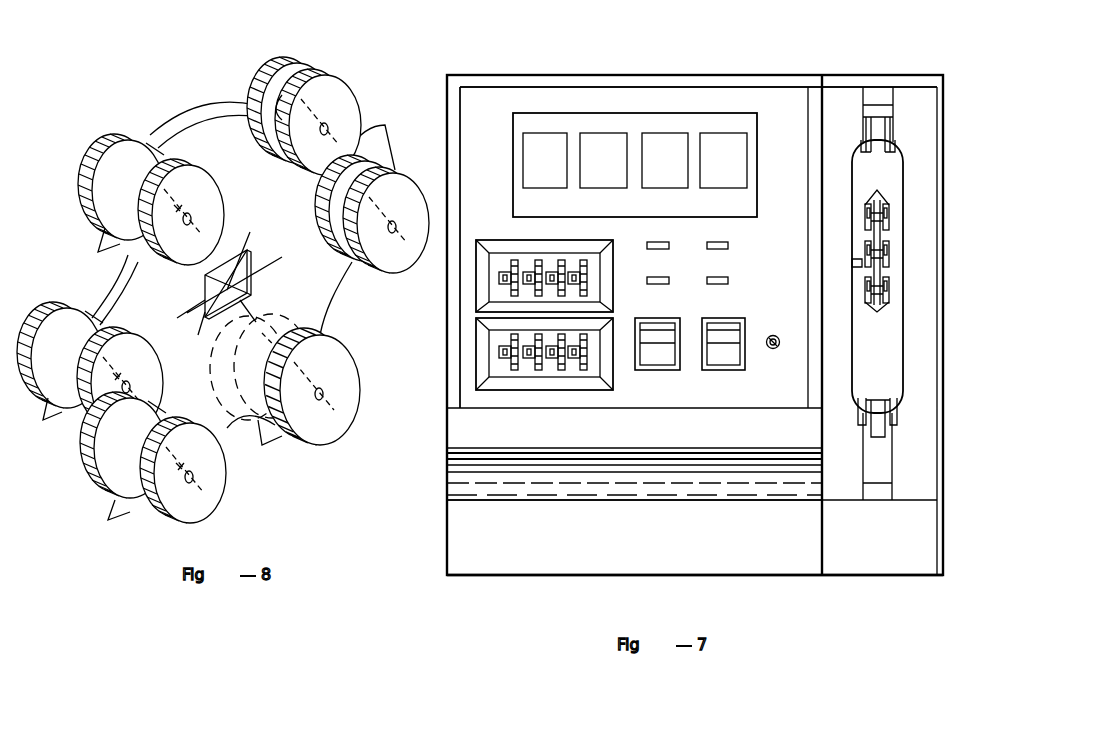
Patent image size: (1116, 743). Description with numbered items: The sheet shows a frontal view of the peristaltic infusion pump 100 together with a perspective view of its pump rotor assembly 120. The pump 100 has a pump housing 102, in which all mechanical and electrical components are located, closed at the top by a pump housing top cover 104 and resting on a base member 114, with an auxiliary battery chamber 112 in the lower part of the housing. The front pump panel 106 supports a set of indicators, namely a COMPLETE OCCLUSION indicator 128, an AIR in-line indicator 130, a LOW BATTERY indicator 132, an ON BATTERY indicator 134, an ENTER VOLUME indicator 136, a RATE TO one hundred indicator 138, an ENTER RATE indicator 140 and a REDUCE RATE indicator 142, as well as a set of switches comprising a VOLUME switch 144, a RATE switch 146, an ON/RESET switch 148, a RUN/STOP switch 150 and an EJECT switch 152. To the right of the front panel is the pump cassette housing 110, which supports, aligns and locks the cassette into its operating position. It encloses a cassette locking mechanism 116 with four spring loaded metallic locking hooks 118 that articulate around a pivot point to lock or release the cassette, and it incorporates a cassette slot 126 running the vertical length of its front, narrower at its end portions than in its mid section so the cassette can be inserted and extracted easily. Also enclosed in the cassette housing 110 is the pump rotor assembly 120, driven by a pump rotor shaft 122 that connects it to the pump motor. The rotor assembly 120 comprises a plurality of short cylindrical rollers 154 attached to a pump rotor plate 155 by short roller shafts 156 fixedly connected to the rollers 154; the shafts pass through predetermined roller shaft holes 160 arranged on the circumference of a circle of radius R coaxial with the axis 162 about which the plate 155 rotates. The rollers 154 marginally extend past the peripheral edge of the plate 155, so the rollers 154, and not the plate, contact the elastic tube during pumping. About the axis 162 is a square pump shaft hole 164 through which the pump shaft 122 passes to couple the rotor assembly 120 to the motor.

In FIG. 7, the peristaltic infusion pump 100 is at (716, 73).
In FIG. 7, the pump housing 102 is at (467, 429).
In FIG. 7, the pump housing top cover 104 is at (662, 78).
In FIG. 7, the front pump panel 106 is at (483, 100).
In FIG. 7, the pump cassette housing 110 is at (928, 480).
In FIG. 7, the auxiliary battery chamber 112 is at (467, 548).
In FIG. 7, the base member 114 is at (577, 578).
In FIG. 7, the cassette locking mechanism 116 is at (880, 100).
In FIG. 7, the locking hooks 118 is at (884, 143).
In FIG. 8, the pump rotor assembly 120 is at (223, 293).
In FIG. 7, the pump rotor shaft 122 is at (852, 263).
In FIG. 7, the cassette slot 126 is at (891, 360).
In FIG. 7, the COMPLETE OCCLUSION indicator 128 is at (560, 172).
In FIG. 7, the AIR in-line indicator 130 is at (618, 172).
In FIG. 7, the LOW BATTERY indicator 132 is at (680, 172).
In FIG. 7, the ON BATTERY indicator 134 is at (738, 172).
In FIG. 7, the ENTER VOLUME indicator 136 is at (662, 243).
In FIG. 7, the RATE TO 100 indicator 138 is at (721, 243).
In FIG. 7, the ENTER RATE indicator 140 is at (658, 277).
In FIG. 7, the REDUCE RATE indicator 142 is at (716, 277).
In FIG. 7, the VOLUME switch 144 is at (474, 291).
In FIG. 7, the RATE switch 146 is at (474, 360).
In FIG. 7, the ON/RESET switch 148 is at (648, 318).
In FIG. 7, the RUN/STOP switch 150 is at (710, 318).
In FIG. 7, the EJECT switch 152 is at (775, 349).
In FIG. 7, the rollers 154 is at (877, 196).
In FIG. 8, the rollers 154 is at (238, 84).
In FIG. 7, the pump rotor plate 155 is at (886, 280).
In FIG. 8, the pump rotor plate 155 is at (311, 283).
In FIG. 8, the roller shafts 156 is at (226, 108).
In FIG. 8, the roller shaft holes 160 is at (312, 101).
In FIG. 8, the axis 162 is at (207, 283).
In FIG. 8, the square pump shaft hole 164 is at (232, 286).